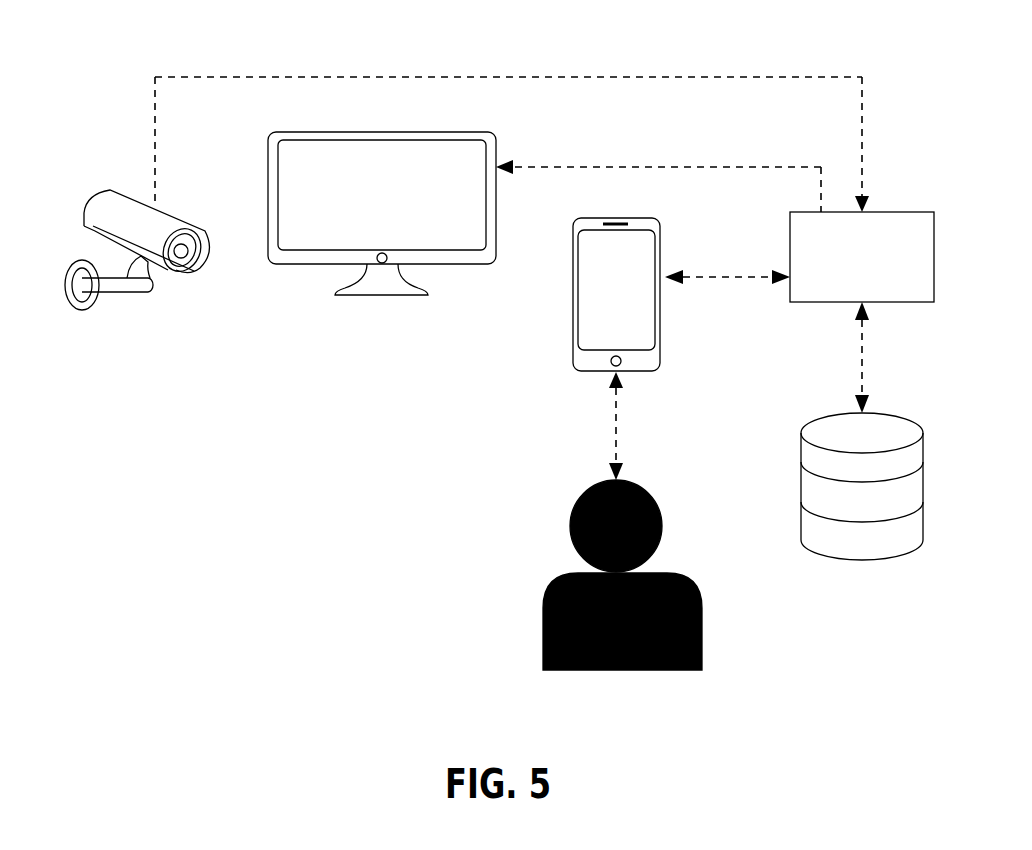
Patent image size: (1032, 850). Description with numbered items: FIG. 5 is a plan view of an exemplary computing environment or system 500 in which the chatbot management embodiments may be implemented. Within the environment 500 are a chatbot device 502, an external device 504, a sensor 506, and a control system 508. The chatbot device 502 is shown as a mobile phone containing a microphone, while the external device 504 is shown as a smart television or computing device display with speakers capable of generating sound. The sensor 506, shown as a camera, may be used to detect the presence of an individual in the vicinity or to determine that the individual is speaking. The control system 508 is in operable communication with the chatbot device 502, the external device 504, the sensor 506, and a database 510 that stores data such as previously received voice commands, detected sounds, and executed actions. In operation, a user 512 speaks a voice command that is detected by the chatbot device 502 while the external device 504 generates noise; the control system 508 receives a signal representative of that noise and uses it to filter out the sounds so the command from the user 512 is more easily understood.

The environment 500 is at (57, 71).
The chatbot device 502 is at (632, 218).
The external device 504 is at (472, 132).
The sensor 506 is at (183, 219).
The control system 508 is at (905, 212).
The database 510 is at (890, 413).
The user 512 is at (641, 486).